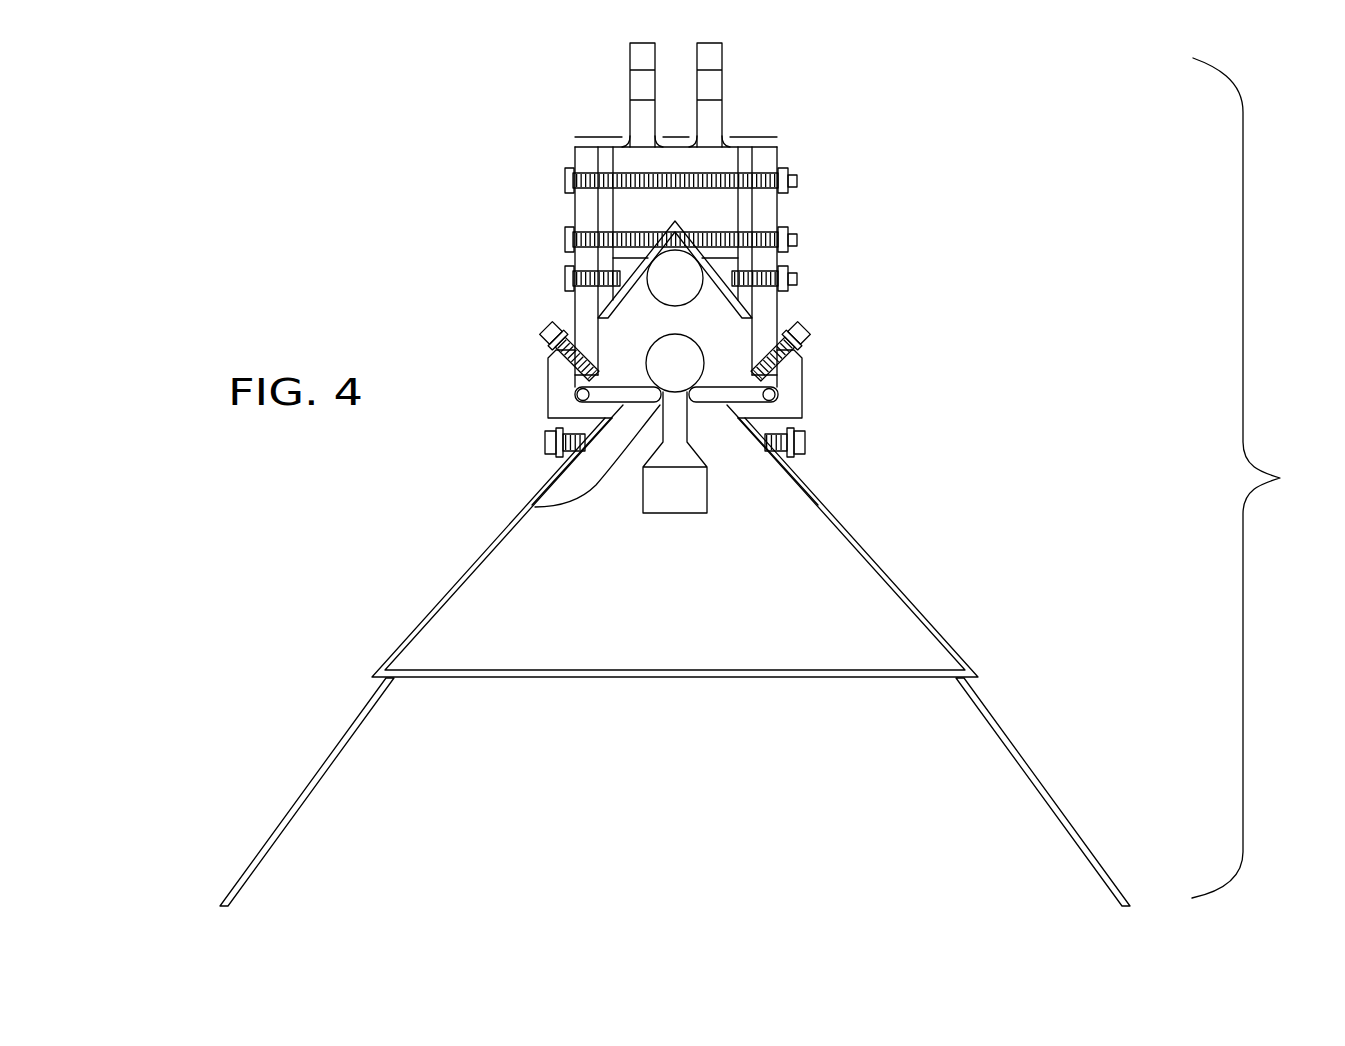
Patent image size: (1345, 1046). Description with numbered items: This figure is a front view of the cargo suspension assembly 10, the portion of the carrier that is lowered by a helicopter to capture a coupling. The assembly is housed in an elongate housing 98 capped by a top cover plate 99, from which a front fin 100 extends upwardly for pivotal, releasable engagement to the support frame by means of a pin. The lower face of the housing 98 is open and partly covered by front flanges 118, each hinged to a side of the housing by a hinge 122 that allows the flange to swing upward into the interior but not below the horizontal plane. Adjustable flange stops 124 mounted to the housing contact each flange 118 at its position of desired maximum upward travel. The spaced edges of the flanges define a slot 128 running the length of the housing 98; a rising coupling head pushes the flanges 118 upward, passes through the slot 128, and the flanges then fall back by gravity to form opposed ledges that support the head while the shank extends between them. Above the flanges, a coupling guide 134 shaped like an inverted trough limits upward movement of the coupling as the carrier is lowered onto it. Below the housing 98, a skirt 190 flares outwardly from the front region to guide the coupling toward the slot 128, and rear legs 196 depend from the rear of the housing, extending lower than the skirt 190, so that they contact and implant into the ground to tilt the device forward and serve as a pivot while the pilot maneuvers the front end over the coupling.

The cargo suspension assembly 10 is at (1257, 478).
The elongate housing 98 is at (558, 378).
The top cover plate 99 is at (758, 141).
The front fin 100 is at (722, 55).
The front flanges 118 is at (705, 397).
The hinge 122 is at (779, 394).
The adjustable flange stops 124 is at (806, 345).
The slot 128 is at (557, 506).
The coupling guide 134 is at (738, 327).
The skirt 190 is at (888, 623).
The rear legs 196 is at (285, 813).